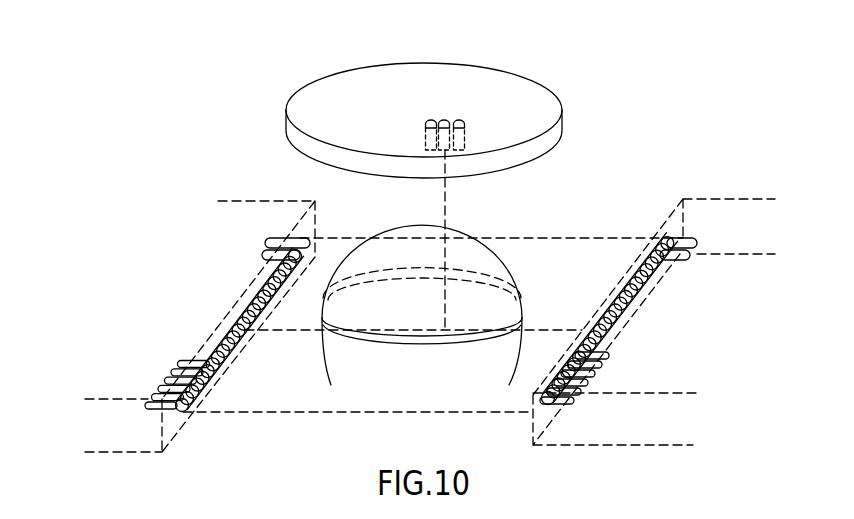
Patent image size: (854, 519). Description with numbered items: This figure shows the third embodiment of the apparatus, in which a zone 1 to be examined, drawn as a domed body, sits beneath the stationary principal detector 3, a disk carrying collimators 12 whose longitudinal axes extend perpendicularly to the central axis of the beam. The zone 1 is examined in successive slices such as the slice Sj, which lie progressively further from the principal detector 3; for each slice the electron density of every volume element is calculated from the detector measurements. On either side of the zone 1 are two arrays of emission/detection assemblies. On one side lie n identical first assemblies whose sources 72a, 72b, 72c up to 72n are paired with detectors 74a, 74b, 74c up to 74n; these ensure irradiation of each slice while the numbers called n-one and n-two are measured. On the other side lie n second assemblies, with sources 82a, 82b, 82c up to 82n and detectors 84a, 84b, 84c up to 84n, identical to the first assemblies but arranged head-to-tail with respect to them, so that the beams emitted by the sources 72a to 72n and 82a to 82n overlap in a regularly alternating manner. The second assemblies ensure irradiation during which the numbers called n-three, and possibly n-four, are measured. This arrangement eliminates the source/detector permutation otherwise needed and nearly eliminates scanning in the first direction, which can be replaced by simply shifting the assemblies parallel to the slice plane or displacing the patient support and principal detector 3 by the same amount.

The zone to be examined 1 is at (340, 350).
The stationary principal detector 3 is at (312, 108).
The collimators 12 is at (447, 120).
The slice Sj is at (405, 343).
The source of first emission/detection assembly 72a is at (145, 406).
The source of first emission/detection assembly 72b is at (158, 389).
The source of first emission/detection assembly 72c is at (171, 372).
The source of first emission/detection assembly 72n is at (266, 248).
The detector of second emission/detection assembly 84a is at (152, 397).
The detector of second emission/detection assembly 84b is at (164, 380).
The detector of second emission/detection assembly 84c is at (178, 364).
The detector of second emission/detection assembly 84n is at (277, 240).
The detector of first emission/detection assembly 74a is at (574, 401).
The detector of first emission/detection assembly 74b is at (588, 383).
The detector of first emission/detection assembly 74c is at (602, 365).
The detector of first emission/detection assembly 74n is at (678, 256).
The source of second emission/detection assembly 82a is at (581, 392).
The source of second emission/detection assembly 82b is at (595, 374).
The source of second emission/detection assembly 82c is at (609, 356).
The source of second emission/detection assembly 82n is at (680, 240).